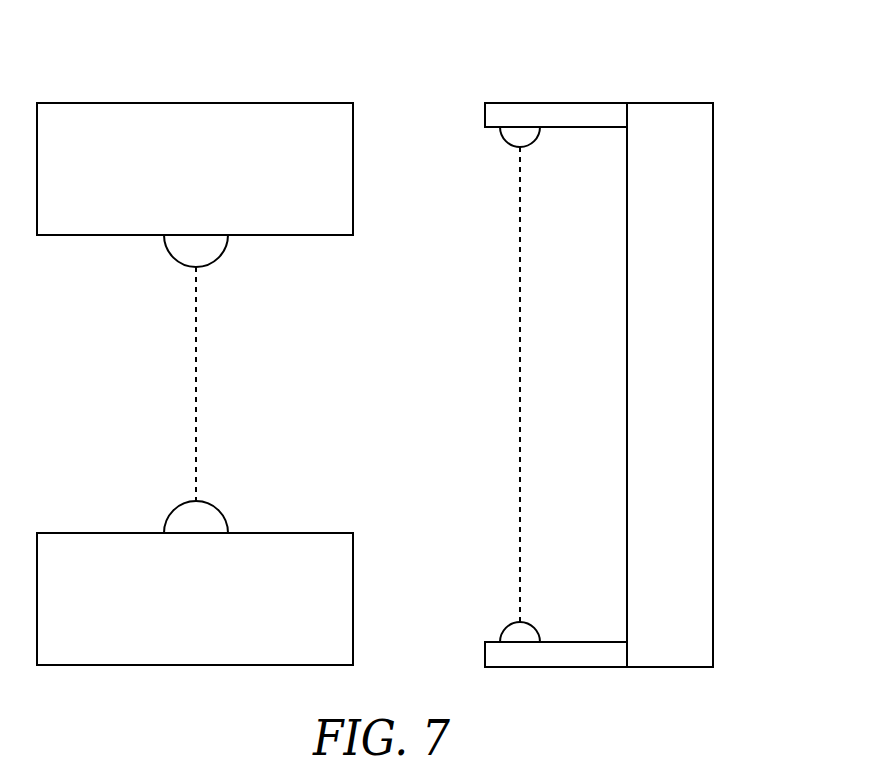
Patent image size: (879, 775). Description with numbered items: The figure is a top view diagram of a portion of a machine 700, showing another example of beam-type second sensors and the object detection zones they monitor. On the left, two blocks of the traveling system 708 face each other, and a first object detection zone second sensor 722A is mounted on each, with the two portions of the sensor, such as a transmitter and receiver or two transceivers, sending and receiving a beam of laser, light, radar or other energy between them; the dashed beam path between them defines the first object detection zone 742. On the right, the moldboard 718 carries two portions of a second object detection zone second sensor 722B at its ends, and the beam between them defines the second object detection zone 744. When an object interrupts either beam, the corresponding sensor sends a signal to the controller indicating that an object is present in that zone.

The machine 700 is at (243, 91).
The traveling system 708 is at (101, 103).
The moldboard 718 is at (697, 481).
The first object detection zone second sensor 722A is at (169, 257).
The second object detection zone second sensor 722B is at (509, 143).
The first object detection zone 742 is at (193, 389).
The second object detection zone 744 is at (517, 391).